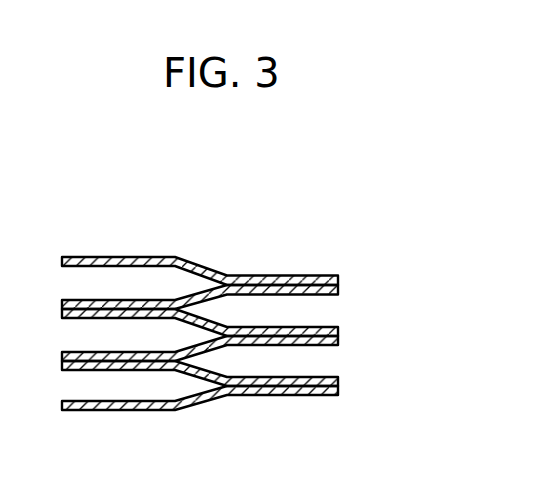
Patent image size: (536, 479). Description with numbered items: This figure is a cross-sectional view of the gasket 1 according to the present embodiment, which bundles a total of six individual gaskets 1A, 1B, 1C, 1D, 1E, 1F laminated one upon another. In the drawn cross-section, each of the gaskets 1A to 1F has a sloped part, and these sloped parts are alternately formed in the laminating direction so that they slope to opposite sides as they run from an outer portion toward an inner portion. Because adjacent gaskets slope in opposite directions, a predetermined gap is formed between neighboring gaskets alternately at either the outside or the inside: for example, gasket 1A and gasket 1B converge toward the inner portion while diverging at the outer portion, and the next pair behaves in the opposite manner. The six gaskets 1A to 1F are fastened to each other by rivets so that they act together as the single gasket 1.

The gasket 1 is at (347, 216).
The gasket 1A is at (331, 278).
The gasket 1B is at (331, 293).
The gasket 1C is at (331, 328).
The gasket 1D is at (331, 344).
The gasket 1E is at (331, 378).
The gasket 1F is at (331, 395).